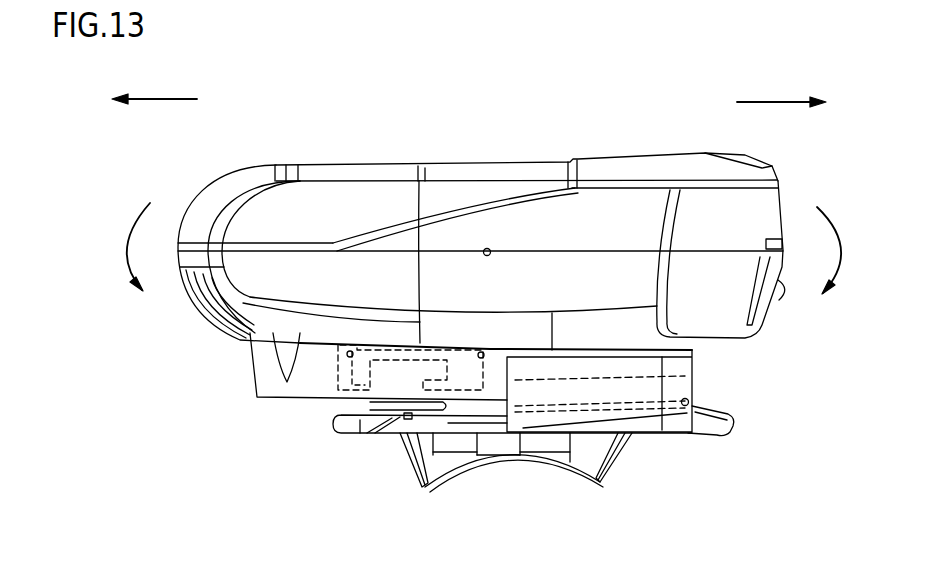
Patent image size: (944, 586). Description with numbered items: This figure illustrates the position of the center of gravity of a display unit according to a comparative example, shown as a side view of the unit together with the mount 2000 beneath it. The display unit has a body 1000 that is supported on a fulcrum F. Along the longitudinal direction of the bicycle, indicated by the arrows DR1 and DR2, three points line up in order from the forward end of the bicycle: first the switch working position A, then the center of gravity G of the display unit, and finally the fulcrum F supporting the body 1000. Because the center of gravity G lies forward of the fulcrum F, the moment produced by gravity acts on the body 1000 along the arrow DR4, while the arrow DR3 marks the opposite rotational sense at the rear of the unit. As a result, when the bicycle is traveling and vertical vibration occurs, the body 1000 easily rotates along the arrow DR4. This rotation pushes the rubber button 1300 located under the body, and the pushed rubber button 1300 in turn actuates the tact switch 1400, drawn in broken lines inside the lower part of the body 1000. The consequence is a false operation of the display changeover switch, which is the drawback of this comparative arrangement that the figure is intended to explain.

The body 1000 is at (262, 142).
The tact switch 1400 is at (393, 368).
The rubber button 1300 is at (400, 417).
The mount / base 2000 is at (527, 474).
The center of gravity G is at (488, 246).
The switch working position A is at (402, 419).
The fulcrum F is at (694, 400).
The arrow DR1 is at (158, 99).
The arrow DR2 is at (775, 101).
The arrow DR3 is at (846, 242).
The arrow DR4 is at (124, 242).